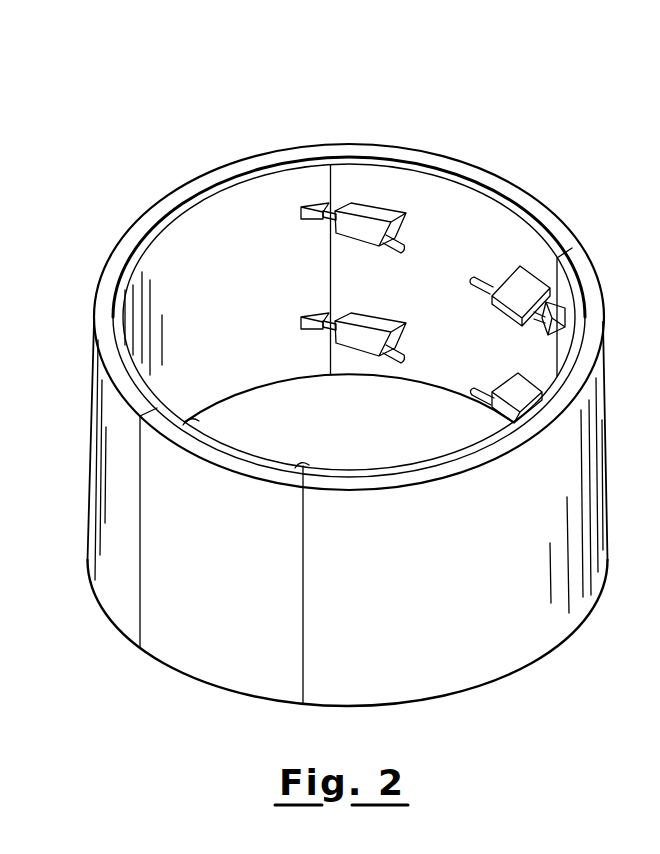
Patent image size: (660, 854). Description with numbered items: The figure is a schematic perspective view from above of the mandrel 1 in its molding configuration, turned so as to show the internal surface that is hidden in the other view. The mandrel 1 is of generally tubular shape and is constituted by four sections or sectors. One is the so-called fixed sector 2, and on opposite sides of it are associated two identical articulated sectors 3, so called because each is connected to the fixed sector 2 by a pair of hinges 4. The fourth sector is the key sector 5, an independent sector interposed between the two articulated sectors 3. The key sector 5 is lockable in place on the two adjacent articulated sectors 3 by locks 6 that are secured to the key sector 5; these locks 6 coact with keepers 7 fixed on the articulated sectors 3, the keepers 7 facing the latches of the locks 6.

The mandrel 1 is at (222, 140).
The fixed sector 2 is at (204, 620).
The articulated sector 3 is at (160, 213).
The hinge 4 is at (205, 423).
The key sector 5 is at (482, 178).
The lock 6 is at (393, 312).
The keeper 7 is at (312, 322).